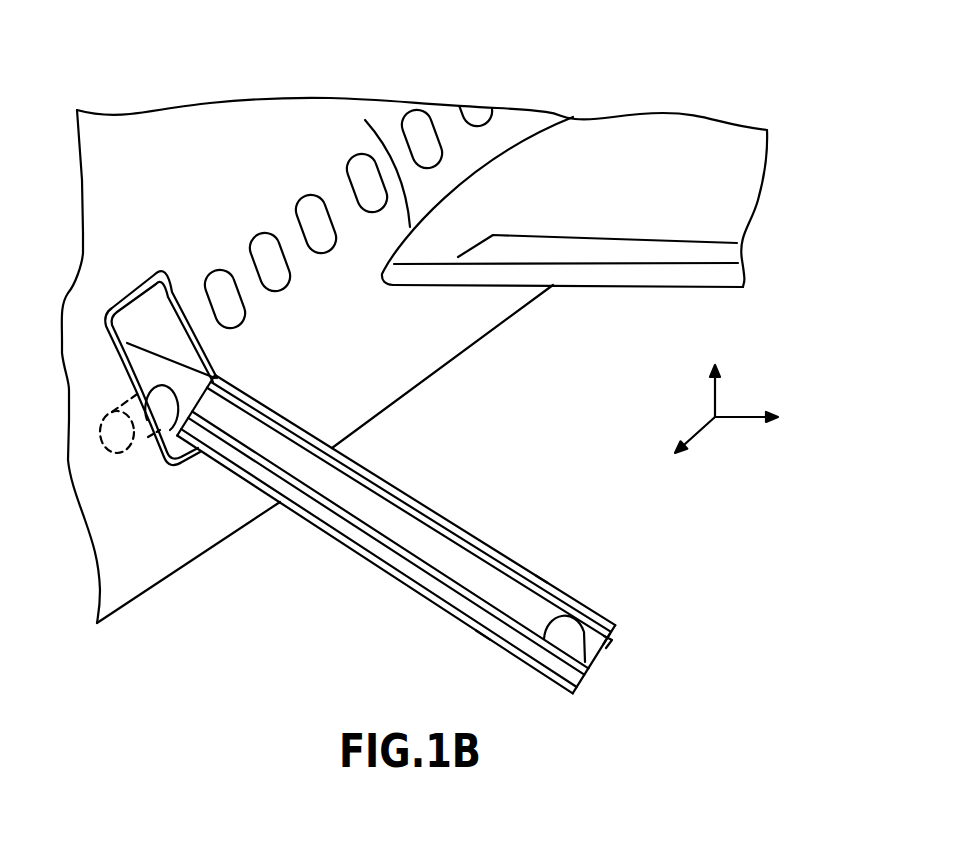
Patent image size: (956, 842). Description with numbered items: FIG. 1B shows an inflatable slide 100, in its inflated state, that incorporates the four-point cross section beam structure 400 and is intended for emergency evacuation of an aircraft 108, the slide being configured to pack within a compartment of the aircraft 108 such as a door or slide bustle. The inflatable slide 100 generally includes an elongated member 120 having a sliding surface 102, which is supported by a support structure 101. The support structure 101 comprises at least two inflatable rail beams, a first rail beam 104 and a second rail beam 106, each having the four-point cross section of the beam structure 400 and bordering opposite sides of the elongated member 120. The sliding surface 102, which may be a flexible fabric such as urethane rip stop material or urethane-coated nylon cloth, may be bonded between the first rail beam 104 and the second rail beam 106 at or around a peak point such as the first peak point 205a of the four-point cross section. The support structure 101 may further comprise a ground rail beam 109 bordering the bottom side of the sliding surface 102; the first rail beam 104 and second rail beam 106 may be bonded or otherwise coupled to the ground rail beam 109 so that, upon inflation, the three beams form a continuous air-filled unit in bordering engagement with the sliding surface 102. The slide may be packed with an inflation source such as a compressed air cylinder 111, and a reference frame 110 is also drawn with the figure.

The inflatable slide 100 is at (427, 534).
The support structure 101 is at (427, 534).
The sliding surface 102 is at (287, 453).
The first rail beam 104 is at (355, 537).
The second rail beam 106 is at (393, 492).
The aircraft 108 is at (206, 140).
The ground rail beam 109 is at (586, 655).
The aircraft coordinate reference 110 is at (748, 375).
The compressed air cylinder 111 is at (137, 392).
The elongated member 120 is at (352, 497).
The first peak point 205a is at (313, 478).
The beam structure 400 is at (542, 578).